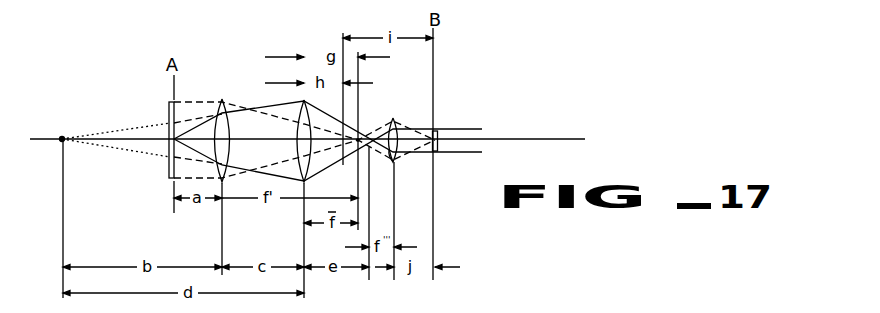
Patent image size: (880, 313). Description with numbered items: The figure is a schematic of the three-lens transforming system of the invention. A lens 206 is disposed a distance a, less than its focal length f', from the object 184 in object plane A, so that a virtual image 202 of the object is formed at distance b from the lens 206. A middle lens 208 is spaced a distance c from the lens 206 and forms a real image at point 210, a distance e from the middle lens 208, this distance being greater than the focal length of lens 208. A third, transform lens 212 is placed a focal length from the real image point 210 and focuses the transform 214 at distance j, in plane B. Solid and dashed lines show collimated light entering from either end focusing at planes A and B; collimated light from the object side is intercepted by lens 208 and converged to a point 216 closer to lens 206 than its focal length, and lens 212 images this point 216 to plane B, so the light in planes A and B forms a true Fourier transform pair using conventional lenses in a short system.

The object 184 is at (169, 105).
The virtual image 202 is at (63, 134).
The lens 206 is at (221, 101).
The middle lens 208 is at (297, 131).
The real image point 210 is at (371, 135).
The third (transform) lens 212 is at (393, 162).
The transform 214 is at (435, 131).
The point 216 is at (357, 149).